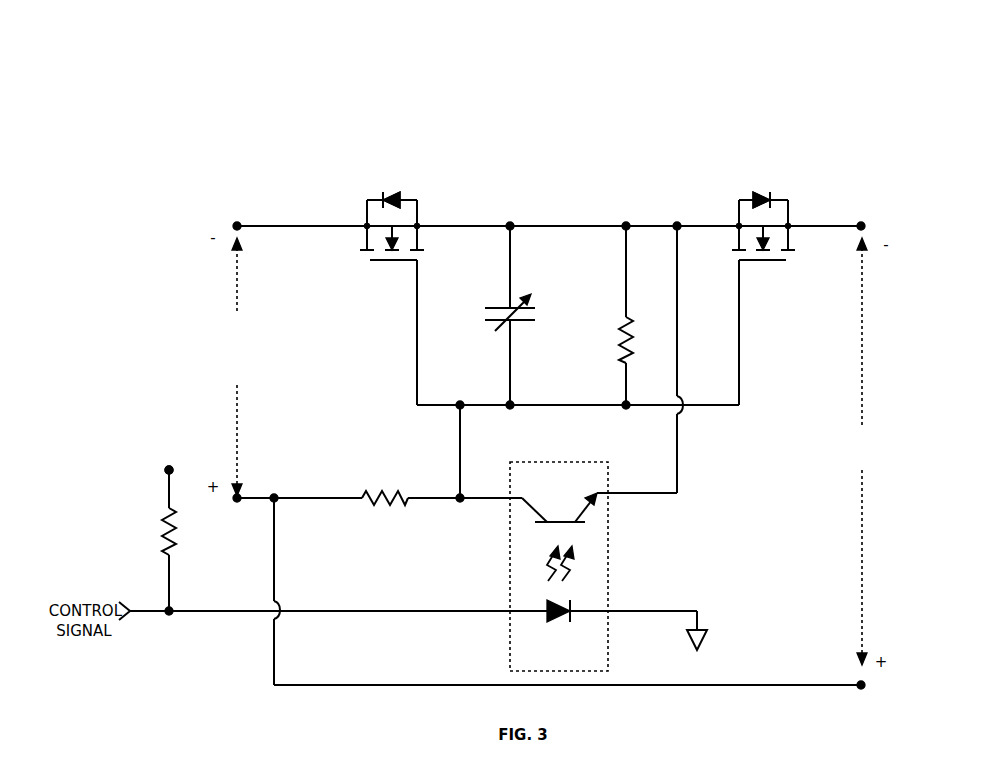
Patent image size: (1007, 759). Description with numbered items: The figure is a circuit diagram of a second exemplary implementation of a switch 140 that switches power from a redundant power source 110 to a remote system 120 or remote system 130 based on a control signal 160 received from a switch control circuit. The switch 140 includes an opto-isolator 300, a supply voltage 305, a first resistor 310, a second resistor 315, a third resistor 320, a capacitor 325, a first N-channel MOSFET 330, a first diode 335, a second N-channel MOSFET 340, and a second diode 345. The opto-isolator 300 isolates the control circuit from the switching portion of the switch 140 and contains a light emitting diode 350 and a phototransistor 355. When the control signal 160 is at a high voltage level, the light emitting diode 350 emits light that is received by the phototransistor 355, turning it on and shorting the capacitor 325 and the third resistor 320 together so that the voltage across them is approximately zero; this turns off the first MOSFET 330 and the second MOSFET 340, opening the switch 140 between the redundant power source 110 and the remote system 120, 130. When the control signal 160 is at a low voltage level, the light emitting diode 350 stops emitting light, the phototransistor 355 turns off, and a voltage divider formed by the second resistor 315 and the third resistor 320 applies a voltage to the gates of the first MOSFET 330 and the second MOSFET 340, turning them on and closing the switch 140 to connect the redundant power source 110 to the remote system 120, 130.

The switch 140 is at (114, 171).
The redundant power source 110 is at (188, 312).
The remote system 120 is at (882, 451).
The remote system 130 is at (898, 412).
The control signal 160 is at (76, 594).
The opto-isolator 300 is at (611, 464).
The supply voltage Vcc 305 is at (169, 450).
The resistor R1 310 is at (189, 540).
The resistor R2 315 is at (385, 476).
The resistor R3 320 is at (608, 315).
The capacitor C 325 is at (494, 315).
The N-channel MOSFET Q1 330 is at (353, 268).
The diode D1 335 is at (397, 186).
The N-channel MOSFET Q2 340 is at (797, 270).
The diode D2 345 is at (763, 186).
The light emitting diode D1 350 is at (558, 632).
The phototransistor Q3 355 is at (559, 498).